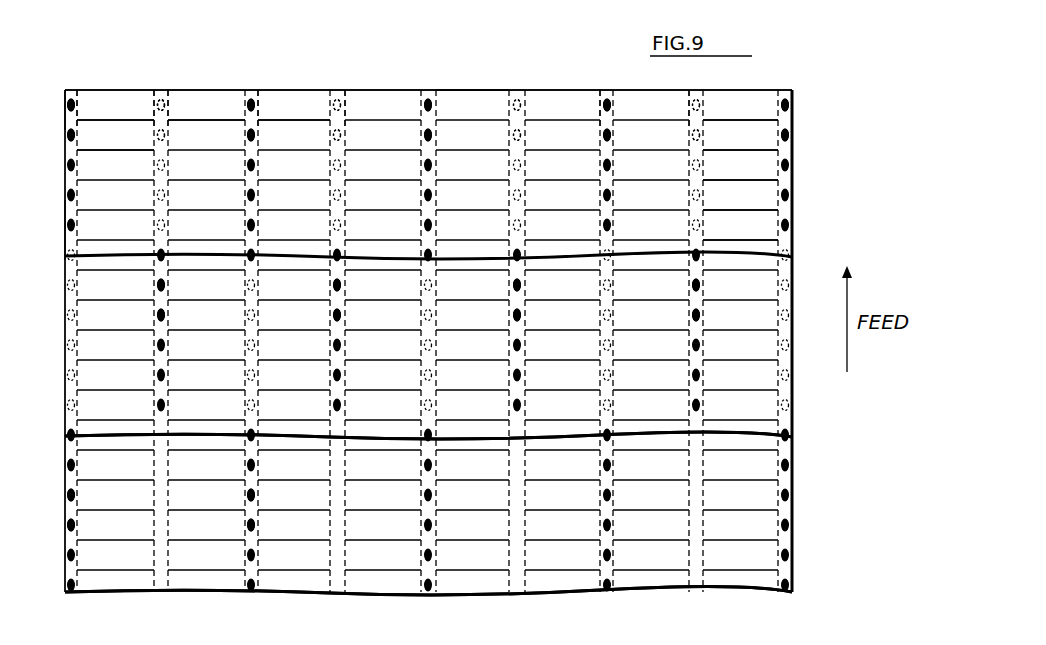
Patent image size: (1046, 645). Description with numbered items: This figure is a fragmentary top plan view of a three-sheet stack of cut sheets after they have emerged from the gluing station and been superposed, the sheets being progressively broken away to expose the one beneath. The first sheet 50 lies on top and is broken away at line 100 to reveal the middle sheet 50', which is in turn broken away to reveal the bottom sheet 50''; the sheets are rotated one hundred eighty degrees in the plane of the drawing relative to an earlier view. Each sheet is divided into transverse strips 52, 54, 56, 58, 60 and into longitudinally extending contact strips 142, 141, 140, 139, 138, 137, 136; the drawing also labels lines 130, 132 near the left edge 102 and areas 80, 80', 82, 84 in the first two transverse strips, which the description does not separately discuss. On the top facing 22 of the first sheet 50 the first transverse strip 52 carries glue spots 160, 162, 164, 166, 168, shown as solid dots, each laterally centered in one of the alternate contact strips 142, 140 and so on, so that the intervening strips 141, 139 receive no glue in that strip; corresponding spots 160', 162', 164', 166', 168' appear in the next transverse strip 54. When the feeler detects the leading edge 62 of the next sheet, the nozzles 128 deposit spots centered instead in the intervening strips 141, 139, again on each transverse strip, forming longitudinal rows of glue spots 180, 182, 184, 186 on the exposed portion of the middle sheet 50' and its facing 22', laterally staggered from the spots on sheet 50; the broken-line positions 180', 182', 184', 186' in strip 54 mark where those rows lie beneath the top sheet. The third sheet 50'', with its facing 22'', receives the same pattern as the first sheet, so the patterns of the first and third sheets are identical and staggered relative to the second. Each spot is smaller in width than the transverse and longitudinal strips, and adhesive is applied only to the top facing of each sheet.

The top facing 22 is at (63, 173).
The second form section 22' is at (62, 346).
The third form section 22'' is at (61, 514).
The cut sheet 50 is at (442, 163).
The middle sheet 50' is at (455, 470).
The bottom sheet 50'' is at (457, 605).
The first transverse strip 52 is at (766, 106).
The transverse strip 54 is at (764, 139).
The transverse strip 56 is at (766, 170).
The fourth label row 58 is at (766, 203).
The fifth label row 60 is at (766, 231).
The leading edge 62 is at (474, 90).
The label 80 is at (115, 106).
The label 80' is at (115, 136).
The label 82 is at (205, 117).
The label 84 is at (285, 117).
The transverse perforation line 100 is at (792, 250).
The side edge 102 is at (65, 233).
The nozzles 128 is at (169, 94).
The longitudinal perforation line 130 is at (154, 94).
The longitudinal perforation line 132 is at (78, 92).
The right margin edge 136 is at (793, 92).
The longitudinal perforation line 137 is at (692, 96).
The longitudinally extending strip 138 is at (603, 100).
The longitudinal contact strip 139 is at (346, 90).
The longitudinal contact strip 140 is at (258, 94).
The longitudinal contact strip 141 is at (163, 94).
The longitudinal contact strip 142 is at (73, 92).
The glue spot 160 is at (102, 508).
The feed holes 160' is at (37, 96).
The glue spot 162 is at (264, 272).
The feed hole 162' is at (221, 137).
The glue spot 164 is at (442, 79).
The feed hole 164' is at (401, 137).
The glue spot 166 is at (632, 86).
The feed hole 166' is at (581, 137).
The glue spot 168 is at (805, 68).
The feed hole 168' is at (759, 137).
The glue spots 180 is at (199, 191).
The feed hole 180' is at (196, 154).
The glue spots 182 is at (351, 183).
The feed hole 182' is at (308, 137).
The glue spots 184 is at (549, 183).
The feed hole 184' is at (491, 137).
The glue spots 186 is at (700, 191).
The feed hole 186' is at (670, 137).